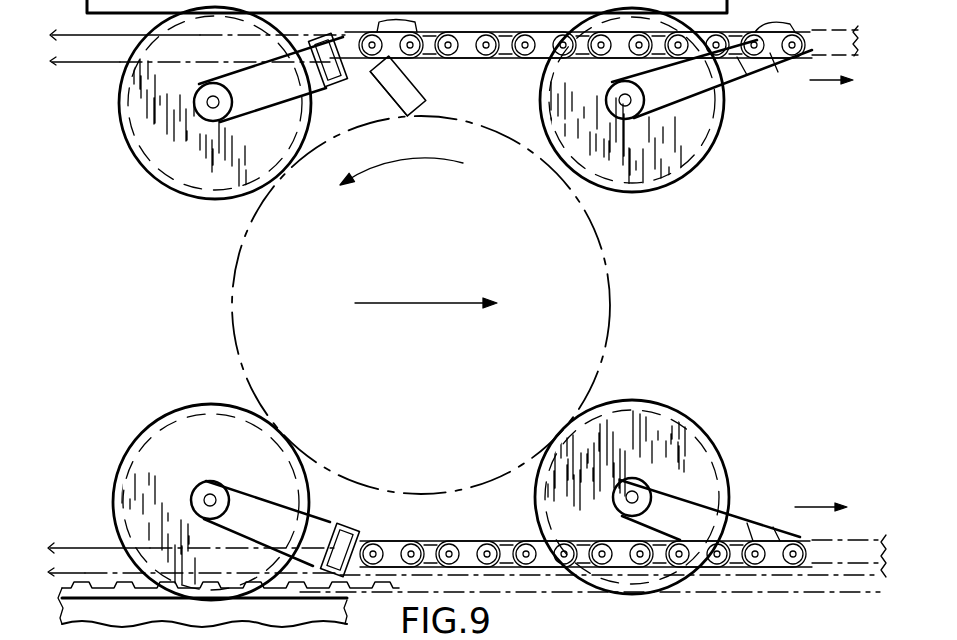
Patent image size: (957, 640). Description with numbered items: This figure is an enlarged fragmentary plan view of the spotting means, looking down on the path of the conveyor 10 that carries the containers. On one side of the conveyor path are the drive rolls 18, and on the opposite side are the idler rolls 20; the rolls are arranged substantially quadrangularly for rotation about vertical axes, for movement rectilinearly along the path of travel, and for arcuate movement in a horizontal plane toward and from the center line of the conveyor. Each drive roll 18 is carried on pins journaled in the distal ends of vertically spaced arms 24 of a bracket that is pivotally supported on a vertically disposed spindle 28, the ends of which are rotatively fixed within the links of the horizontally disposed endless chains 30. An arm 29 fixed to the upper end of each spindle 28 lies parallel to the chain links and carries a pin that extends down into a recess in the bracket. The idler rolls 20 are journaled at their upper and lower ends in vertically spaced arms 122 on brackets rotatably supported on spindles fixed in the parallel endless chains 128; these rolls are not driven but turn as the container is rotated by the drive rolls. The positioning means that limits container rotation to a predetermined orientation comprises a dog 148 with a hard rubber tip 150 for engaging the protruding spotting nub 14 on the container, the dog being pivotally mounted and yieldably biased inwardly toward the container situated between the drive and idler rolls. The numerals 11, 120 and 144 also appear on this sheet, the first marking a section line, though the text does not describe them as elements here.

The conveyor 10 is at (10, 120).
The lower section line / guide rail 11 is at (15, 547).
The spotting nub 14 is at (416, 107).
The drive rolls 18 is at (143, 414).
The idler rolls 20 is at (168, 199).
The arms 24 is at (250, 507).
The spindle 28 is at (206, 492).
The arm 29 is at (118, 639).
The endless chains 30 is at (466, 549).
The upper arm pivot 120 is at (199, 88).
The arms 122 is at (252, 104).
The endless chains 128 is at (482, 60).
The mounting block 144 is at (340, 73).
The dog 148 is at (402, 72).
The hard rubber tip 150 is at (418, 106).